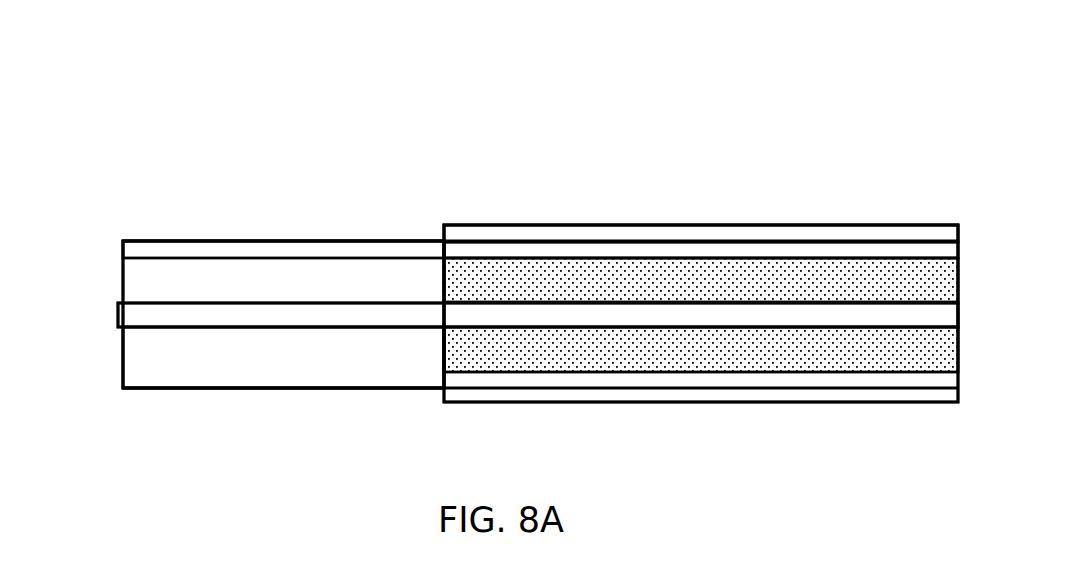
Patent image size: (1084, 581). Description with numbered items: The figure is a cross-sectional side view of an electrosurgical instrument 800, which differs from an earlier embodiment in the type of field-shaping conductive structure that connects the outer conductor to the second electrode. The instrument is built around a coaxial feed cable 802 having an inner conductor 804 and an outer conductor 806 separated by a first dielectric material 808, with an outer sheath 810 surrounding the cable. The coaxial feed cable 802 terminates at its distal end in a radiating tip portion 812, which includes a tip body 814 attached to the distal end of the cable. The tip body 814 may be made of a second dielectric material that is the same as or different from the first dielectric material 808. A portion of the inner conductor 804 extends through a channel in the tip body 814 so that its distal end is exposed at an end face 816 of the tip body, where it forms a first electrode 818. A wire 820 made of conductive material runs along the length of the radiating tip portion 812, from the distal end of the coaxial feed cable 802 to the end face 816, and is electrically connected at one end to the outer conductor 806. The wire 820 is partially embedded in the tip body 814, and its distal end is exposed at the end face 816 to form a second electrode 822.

The electrosurgical instrument 800 is at (461, 94).
The coaxial feed cable 802 is at (763, 94).
The inner conductor 804 is at (670, 300).
The outer conductor 806 is at (868, 240).
The first dielectric material 808 is at (765, 355).
The outer sheath 810 is at (552, 225).
The radiating tip portion 812 is at (239, 94).
The tip body 814 is at (247, 390).
The end face 816 is at (123, 354).
The first electrode 818 is at (118, 318).
The wire 820 is at (362, 240).
The second electrode 822 is at (123, 250).